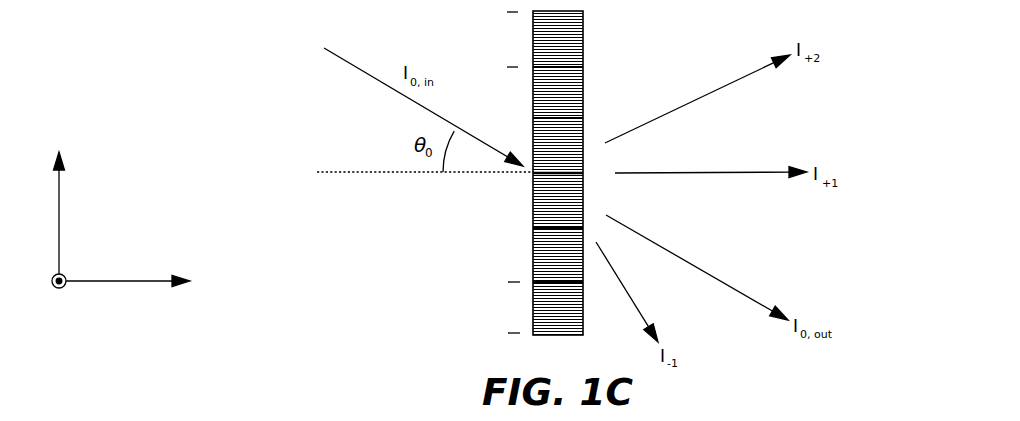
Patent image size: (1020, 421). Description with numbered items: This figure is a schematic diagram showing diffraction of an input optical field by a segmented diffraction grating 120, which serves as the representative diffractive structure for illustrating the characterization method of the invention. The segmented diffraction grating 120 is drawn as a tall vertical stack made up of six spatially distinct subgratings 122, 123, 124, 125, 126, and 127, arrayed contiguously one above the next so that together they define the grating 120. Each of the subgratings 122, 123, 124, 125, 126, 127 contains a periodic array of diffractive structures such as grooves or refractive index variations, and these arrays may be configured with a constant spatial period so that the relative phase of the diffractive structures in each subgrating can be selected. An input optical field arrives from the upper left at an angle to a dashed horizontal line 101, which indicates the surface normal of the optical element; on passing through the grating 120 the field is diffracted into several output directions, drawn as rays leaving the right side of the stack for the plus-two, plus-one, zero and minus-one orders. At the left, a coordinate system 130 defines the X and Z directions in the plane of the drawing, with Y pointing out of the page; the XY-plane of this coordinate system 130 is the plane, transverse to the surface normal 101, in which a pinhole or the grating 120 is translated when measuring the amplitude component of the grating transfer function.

The surface normal 101 is at (372, 175).
The segmented diffraction grating 120 is at (531, 171).
The subgrating 122 is at (584, 42).
The subgrating 123 is at (584, 95).
The subgrating 124 is at (532, 131).
The subgrating 125 is at (533, 192).
The subgrating 126 is at (533, 237).
The subgrating 127 is at (584, 308).
The coordinate system 130 is at (128, 206).